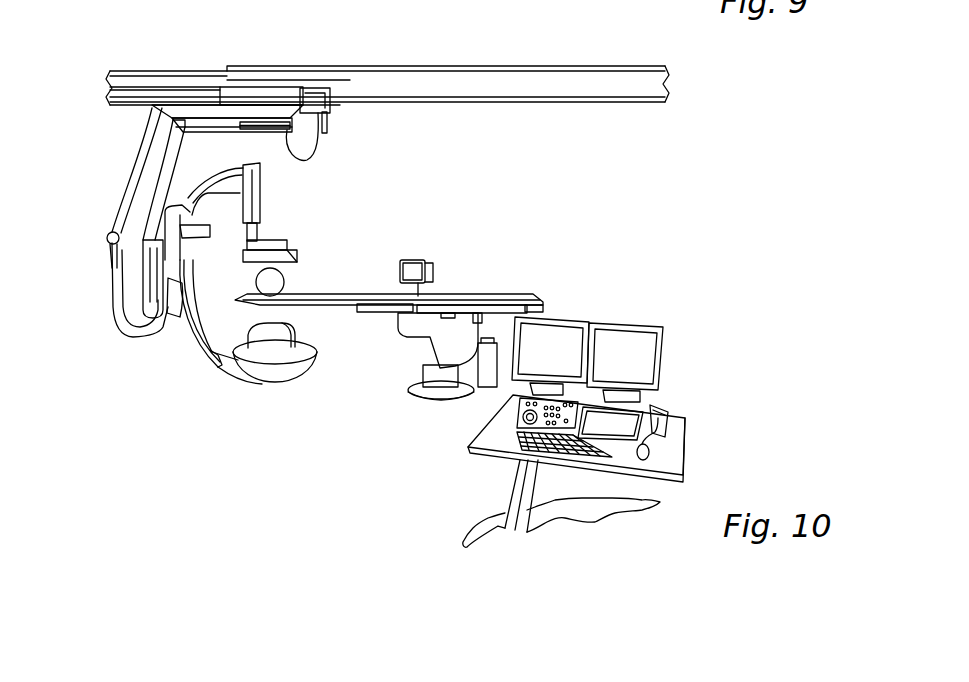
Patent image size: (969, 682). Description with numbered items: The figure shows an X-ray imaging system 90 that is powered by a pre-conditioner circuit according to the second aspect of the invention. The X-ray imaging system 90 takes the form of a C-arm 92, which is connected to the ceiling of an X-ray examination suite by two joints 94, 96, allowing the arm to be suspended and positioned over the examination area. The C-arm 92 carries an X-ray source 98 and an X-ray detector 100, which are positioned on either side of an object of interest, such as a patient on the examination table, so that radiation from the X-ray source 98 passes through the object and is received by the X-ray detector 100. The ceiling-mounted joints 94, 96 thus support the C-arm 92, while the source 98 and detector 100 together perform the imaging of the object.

The X-ray imaging system 90 is at (95, 188).
The C-arm 92 is at (173, 301).
The joint 94 is at (270, 120).
The joint 96 is at (147, 263).
The X-ray source 98 is at (297, 327).
The X-ray detector 100 is at (302, 256).